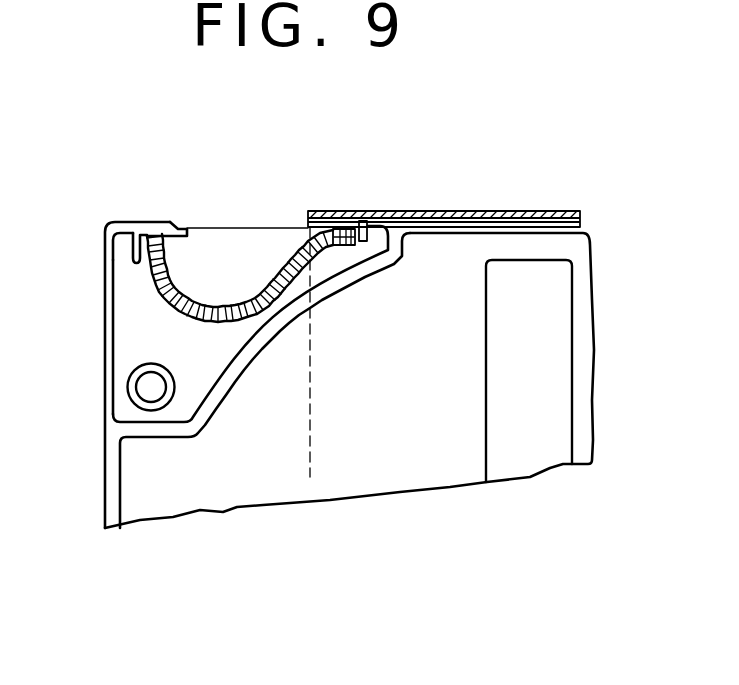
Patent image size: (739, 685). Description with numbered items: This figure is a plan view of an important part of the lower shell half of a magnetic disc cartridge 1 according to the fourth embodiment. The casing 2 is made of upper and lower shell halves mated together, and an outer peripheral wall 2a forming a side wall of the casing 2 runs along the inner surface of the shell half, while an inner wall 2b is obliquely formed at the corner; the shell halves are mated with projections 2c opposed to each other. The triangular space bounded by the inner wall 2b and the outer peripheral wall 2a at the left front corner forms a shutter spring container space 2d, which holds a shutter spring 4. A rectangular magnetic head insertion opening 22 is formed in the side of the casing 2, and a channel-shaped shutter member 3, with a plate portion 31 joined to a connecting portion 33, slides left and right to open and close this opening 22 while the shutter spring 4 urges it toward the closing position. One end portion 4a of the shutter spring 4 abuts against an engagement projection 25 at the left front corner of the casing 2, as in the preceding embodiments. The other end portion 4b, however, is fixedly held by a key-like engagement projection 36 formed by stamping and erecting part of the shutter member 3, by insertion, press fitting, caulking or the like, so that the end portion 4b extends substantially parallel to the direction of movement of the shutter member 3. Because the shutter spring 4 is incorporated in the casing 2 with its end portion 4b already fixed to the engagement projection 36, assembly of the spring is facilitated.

The magnetic disc cartridge 1 is at (93, 173).
The casing 2 is at (103, 468).
The outer peripheral wall 2a is at (110, 345).
The inner wall 2b is at (258, 364).
The projection 2c is at (130, 395).
The shutter spring container space 2d is at (130, 296).
The shutter member 3 is at (548, 211).
The shutter spring 4 is at (263, 293).
The end portion of the shutter spring 4a is at (153, 234).
The end portion of the shutter spring 4b is at (348, 212).
The magnetic head insertion opening 22 is at (560, 347).
The engagement projection 25 is at (110, 257).
The plate portion 31 is at (312, 477).
The connecting portion 33 is at (478, 210).
The engagement projection 36 is at (382, 212).